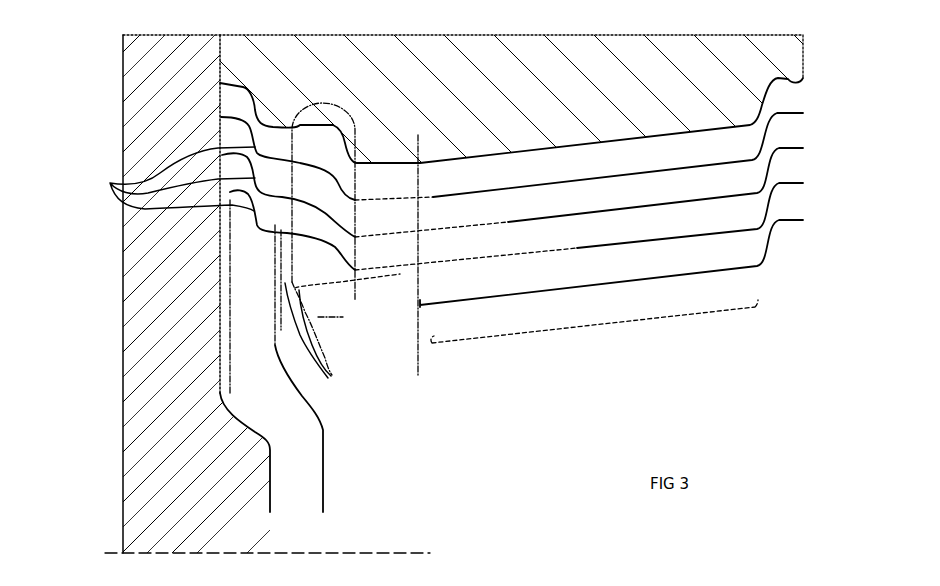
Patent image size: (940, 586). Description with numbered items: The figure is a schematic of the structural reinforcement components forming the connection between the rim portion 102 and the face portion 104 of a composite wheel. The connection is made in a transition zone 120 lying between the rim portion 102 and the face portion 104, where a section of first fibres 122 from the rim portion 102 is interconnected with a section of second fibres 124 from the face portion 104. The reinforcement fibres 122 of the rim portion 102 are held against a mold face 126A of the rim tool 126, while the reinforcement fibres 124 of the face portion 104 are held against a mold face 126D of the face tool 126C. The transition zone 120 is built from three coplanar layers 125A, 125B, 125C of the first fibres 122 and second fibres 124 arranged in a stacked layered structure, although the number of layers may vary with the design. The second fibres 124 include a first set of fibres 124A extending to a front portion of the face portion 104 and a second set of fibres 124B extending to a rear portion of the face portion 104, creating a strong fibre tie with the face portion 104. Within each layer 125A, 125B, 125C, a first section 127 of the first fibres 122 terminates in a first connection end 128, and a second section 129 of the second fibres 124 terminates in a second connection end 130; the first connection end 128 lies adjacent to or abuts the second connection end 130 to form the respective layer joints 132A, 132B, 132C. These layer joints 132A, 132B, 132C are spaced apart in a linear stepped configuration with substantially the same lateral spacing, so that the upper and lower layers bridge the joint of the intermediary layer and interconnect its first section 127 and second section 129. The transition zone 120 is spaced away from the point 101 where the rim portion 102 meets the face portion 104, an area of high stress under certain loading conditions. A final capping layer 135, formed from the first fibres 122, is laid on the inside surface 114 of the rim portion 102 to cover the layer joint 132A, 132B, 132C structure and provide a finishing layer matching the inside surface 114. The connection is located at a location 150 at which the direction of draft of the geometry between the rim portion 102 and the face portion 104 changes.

The rim tool 126 is at (475, 85).
The mold face 126A is at (657, 147).
The face tool 126C is at (182, 458).
The mold face 126D is at (279, 452).
The first section 127 is at (575, 118).
The first fibres 122 is at (798, 113).
The second fibres 124 is at (414, 270).
The first set of fibres 124A is at (140, 179).
The second set of fibres 124B is at (544, 306).
The layer 125A is at (820, 193).
The layer 125B is at (824, 150).
The layer 125C is at (823, 115).
The first connection end 128 is at (433, 196).
The second connection end 130 is at (508, 222).
The layer joint 132A is at (554, 246).
The layer joint 132B is at (513, 203).
The layer joint 132C is at (426, 187).
The second section 129 is at (405, 294).
The point 101 is at (345, 325).
The rim portion 102 is at (873, 177).
The face portion 104 is at (283, 416).
The transition zone 120 is at (587, 326).
The inside surface 114 is at (523, 358).
The capping layer 135 is at (803, 222).
The location 150 is at (422, 372).